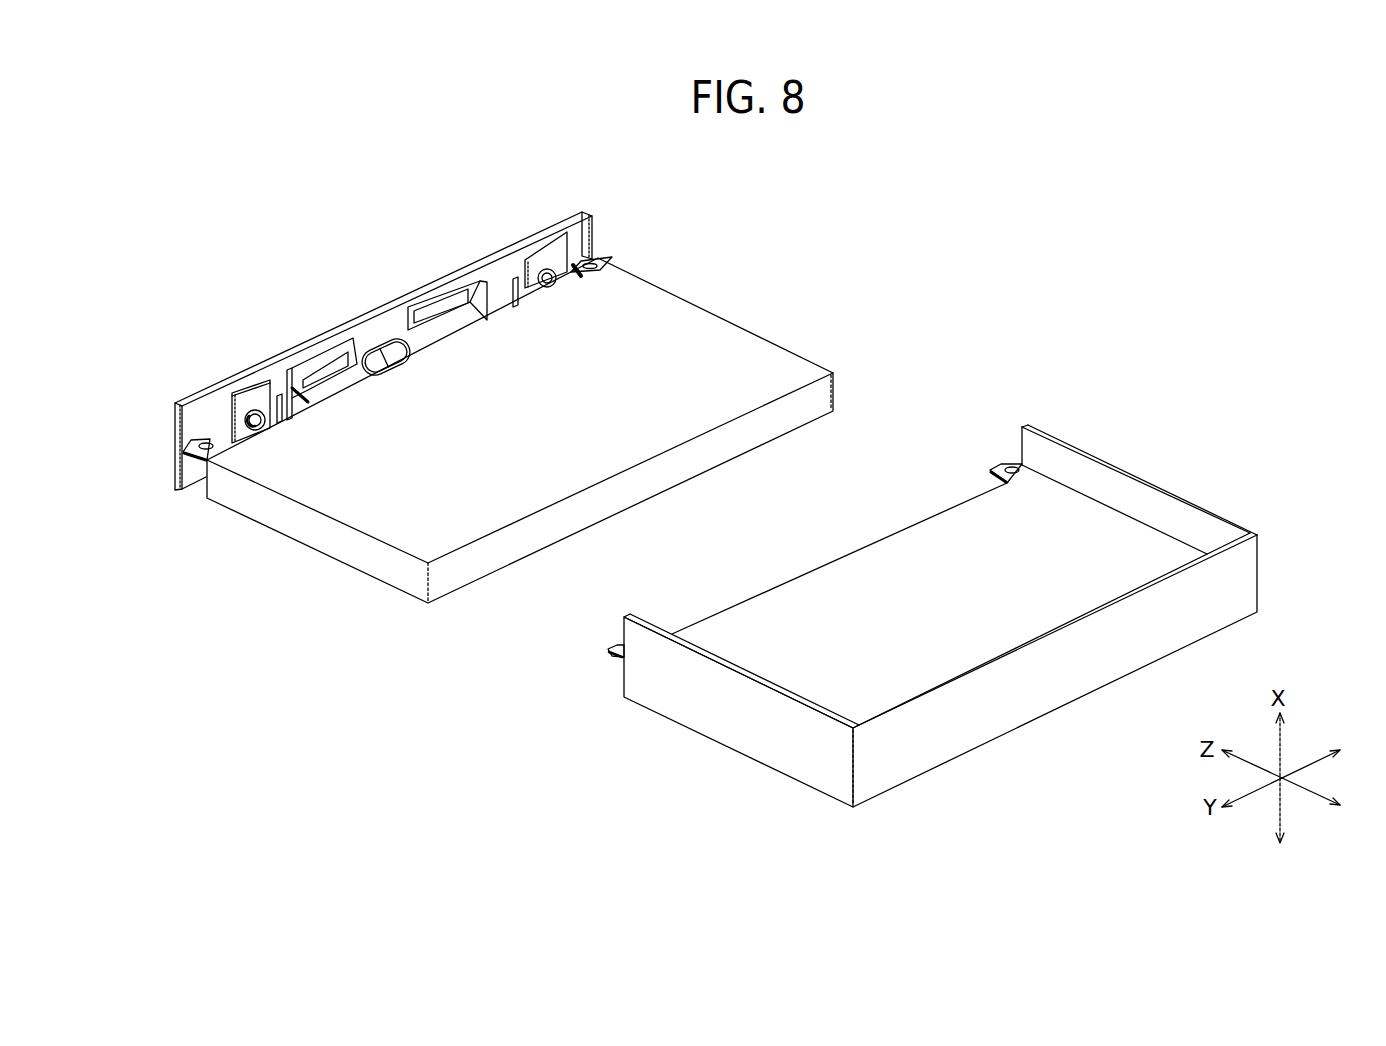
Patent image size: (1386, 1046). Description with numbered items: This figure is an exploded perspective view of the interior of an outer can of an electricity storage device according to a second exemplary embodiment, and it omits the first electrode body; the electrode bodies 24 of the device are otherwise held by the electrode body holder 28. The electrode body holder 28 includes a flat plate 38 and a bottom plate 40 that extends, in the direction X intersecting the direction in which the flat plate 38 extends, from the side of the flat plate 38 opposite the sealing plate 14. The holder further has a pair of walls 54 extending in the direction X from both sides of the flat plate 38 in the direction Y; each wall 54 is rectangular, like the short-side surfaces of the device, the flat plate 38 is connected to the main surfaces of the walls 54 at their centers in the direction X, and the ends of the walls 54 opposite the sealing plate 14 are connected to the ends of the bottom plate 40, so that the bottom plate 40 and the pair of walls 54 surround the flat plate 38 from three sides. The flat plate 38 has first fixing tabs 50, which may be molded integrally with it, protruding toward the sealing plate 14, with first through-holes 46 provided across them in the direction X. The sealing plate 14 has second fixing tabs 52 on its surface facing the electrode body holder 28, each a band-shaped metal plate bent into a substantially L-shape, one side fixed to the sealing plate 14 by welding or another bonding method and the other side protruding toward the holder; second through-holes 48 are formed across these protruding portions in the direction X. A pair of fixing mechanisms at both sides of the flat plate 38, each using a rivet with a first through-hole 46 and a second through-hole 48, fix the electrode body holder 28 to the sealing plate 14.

The sealing plate 14 is at (377, 313).
The electrode body 24 is at (317, 533).
The electrode body holder 28 is at (951, 591).
The flat plate 38 is at (915, 532).
The bottom plate 40 is at (1080, 678).
The first through-hole 46 is at (1014, 460).
The second through-hole 48 is at (205, 443).
The first fixing tab 50 is at (1023, 473).
The second fixing tab 52 is at (184, 452).
The wall 54 is at (1137, 476).